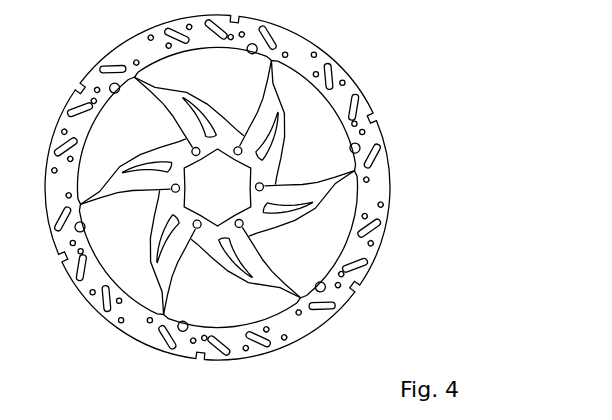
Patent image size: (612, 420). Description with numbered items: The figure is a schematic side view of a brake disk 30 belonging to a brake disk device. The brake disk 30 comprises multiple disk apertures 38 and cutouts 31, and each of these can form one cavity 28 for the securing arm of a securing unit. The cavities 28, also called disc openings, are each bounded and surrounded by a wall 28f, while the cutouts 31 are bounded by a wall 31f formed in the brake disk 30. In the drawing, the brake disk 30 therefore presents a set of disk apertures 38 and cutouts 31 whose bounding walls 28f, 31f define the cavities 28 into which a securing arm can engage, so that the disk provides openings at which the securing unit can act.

The brake disk 30 is at (225, 197).
The cutout 31 is at (288, 123).
The wall 31f is at (276, 162).
The cavity 28 is at (172, 169).
The wall 28f is at (161, 204).
The disk aperture 38 is at (236, 220).